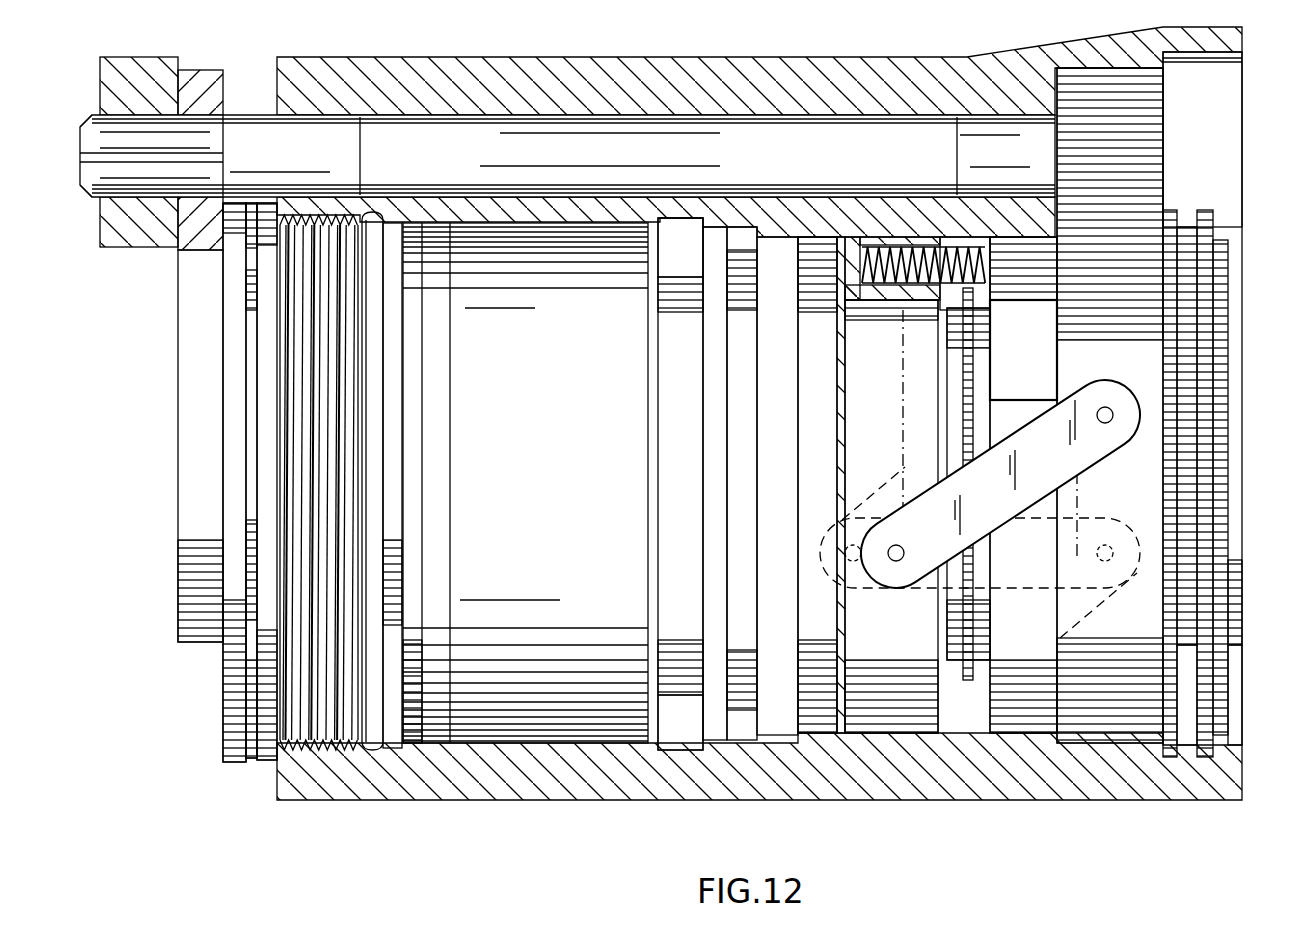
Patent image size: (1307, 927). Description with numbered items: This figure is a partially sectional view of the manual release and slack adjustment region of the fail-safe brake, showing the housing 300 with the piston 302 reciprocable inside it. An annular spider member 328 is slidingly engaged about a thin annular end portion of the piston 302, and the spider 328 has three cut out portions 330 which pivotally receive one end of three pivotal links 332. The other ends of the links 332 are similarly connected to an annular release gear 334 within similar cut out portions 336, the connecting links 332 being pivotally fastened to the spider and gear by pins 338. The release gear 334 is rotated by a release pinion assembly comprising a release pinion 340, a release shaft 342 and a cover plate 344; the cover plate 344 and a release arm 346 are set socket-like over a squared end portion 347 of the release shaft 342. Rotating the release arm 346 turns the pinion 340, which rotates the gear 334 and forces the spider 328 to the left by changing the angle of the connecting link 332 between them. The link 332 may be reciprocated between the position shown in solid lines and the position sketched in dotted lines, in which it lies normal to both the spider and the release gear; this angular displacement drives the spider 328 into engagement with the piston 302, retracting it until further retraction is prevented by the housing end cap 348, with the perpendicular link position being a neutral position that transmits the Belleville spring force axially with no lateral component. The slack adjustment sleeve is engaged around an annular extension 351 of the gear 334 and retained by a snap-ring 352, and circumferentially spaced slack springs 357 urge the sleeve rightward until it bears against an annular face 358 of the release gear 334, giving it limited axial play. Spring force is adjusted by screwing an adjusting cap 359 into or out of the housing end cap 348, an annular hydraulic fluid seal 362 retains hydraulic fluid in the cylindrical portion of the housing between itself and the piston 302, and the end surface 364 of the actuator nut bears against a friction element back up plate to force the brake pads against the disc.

The housing 300 is at (448, 770).
The piston 302 is at (552, 715).
The annular spider member 328 is at (876, 718).
The cut out portions 330 is at (920, 590).
The pivotal links 332 is at (1078, 482).
The annular gear 334 is at (1138, 728).
The cut out portions 336 is at (1072, 383).
The pins 338 is at (1108, 420).
The release pinion 340 is at (1070, 100).
The release shaft 342 is at (885, 132).
The cover plate 344 is at (200, 340).
The release arm 346 is at (108, 82).
The squared end portion 347 is at (92, 200).
The housing end cap 348 is at (305, 248).
The annular extension 351 is at (957, 660).
The snap-ring 352 is at (965, 680).
The slack springs 357 is at (857, 245).
The annular face 358 is at (1047, 715).
The adjusting cap 359 is at (268, 388).
The annular hydraulic fluid seal 362 is at (778, 720).
The end surface 364 is at (1243, 592).